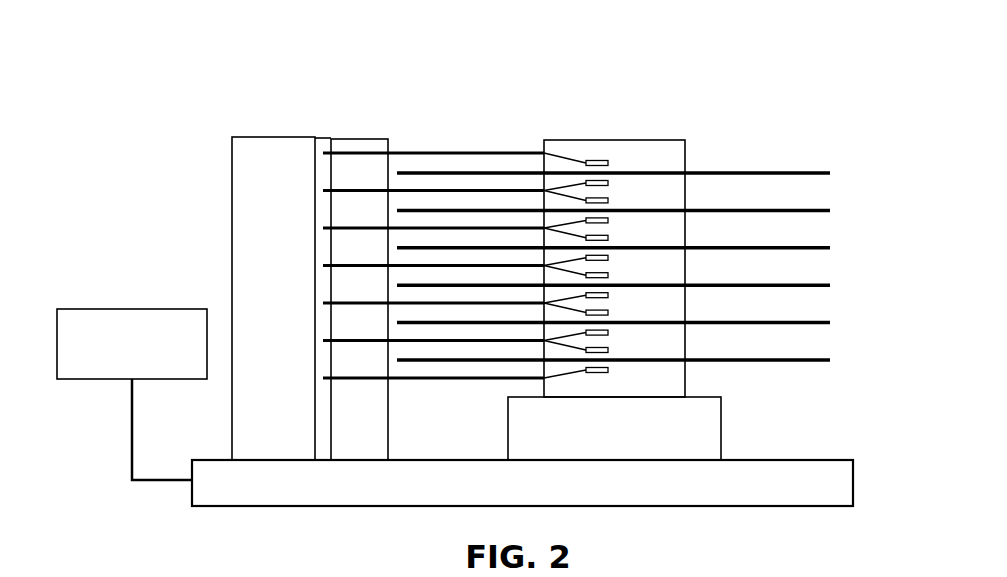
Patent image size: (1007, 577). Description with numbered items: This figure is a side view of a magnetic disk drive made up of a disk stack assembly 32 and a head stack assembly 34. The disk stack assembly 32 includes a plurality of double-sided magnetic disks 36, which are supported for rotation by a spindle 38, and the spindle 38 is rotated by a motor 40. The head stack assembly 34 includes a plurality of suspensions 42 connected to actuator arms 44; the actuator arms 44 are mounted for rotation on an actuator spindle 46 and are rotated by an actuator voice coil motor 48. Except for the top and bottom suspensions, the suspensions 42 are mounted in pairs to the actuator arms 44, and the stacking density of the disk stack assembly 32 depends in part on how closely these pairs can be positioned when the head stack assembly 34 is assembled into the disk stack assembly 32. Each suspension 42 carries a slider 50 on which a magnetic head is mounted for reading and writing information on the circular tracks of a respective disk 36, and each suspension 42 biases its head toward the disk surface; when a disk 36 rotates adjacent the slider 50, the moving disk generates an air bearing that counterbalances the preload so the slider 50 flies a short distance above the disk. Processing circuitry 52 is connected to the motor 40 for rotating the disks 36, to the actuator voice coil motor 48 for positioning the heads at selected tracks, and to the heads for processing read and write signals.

The disk stack assembly 32 is at (762, 148).
The head stack assembly 34 is at (437, 136).
The magnetic disks 36 is at (830, 210).
The spindle 38 is at (657, 142).
The motor 40 is at (712, 428).
The suspensions 42 is at (583, 163).
The actuator arms 44 is at (512, 190).
The actuator spindle 46 is at (358, 139).
The actuator voice coil motor 48 is at (232, 220).
The slider 50 is at (608, 183).
The processing circuitry 52 is at (100, 309).